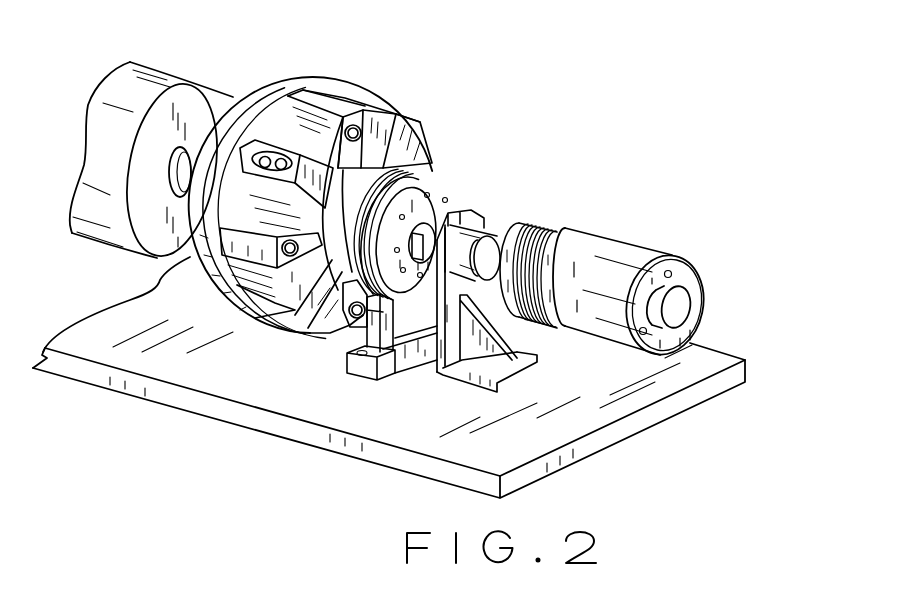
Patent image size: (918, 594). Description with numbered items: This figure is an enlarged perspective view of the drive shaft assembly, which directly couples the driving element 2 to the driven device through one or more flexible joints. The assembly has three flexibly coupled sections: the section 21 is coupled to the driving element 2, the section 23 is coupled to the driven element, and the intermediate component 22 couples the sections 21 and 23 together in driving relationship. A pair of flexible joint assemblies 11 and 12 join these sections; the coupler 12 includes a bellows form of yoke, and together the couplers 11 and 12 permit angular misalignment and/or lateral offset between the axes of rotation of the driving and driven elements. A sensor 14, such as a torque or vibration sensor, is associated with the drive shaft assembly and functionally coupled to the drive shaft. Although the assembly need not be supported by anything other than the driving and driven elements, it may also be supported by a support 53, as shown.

The driving element 2 is at (155, 70).
The section 21 is at (303, 70).
The flexible joint assembly 11 is at (385, 90).
The sensor 14 is at (443, 167).
The intermediate component 22 is at (460, 197).
The flexible joint assembly 12 is at (570, 222).
The section 23 is at (633, 235).
The support 53 is at (462, 376).